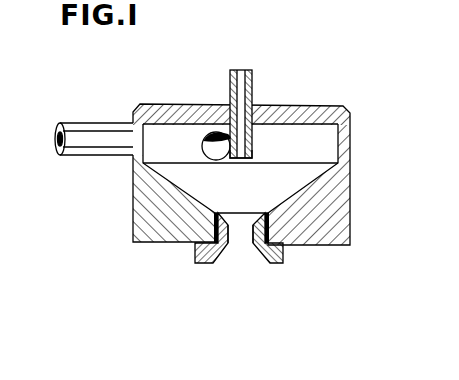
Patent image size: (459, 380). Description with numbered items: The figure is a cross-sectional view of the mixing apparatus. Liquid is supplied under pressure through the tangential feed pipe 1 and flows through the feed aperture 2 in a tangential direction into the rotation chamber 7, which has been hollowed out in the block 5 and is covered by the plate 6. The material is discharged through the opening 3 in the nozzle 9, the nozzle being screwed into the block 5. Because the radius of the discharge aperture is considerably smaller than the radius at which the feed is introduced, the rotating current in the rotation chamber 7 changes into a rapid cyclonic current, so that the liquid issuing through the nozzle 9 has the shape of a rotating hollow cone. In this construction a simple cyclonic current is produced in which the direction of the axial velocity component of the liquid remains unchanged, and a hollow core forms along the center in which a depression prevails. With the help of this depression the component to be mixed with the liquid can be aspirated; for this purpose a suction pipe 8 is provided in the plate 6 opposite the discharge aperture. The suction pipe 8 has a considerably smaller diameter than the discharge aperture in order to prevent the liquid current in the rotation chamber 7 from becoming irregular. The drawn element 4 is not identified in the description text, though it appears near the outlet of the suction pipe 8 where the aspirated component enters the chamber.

The tangential feed pipe 1 is at (87, 125).
The feed aperture 2 is at (203, 143).
The opening 3 is at (240, 237).
The capillary outlet 4 is at (232, 160).
The block 5 is at (134, 211).
The plate 6 is at (325, 112).
The rotation chamber 7 is at (333, 146).
The suction pipe 8 is at (252, 98).
The nozzle 9 is at (283, 262).